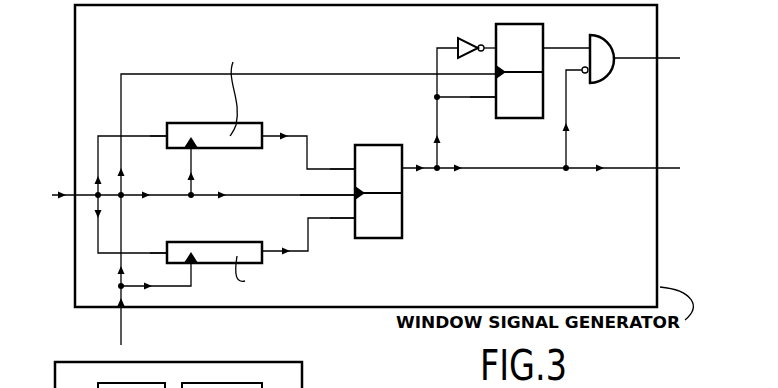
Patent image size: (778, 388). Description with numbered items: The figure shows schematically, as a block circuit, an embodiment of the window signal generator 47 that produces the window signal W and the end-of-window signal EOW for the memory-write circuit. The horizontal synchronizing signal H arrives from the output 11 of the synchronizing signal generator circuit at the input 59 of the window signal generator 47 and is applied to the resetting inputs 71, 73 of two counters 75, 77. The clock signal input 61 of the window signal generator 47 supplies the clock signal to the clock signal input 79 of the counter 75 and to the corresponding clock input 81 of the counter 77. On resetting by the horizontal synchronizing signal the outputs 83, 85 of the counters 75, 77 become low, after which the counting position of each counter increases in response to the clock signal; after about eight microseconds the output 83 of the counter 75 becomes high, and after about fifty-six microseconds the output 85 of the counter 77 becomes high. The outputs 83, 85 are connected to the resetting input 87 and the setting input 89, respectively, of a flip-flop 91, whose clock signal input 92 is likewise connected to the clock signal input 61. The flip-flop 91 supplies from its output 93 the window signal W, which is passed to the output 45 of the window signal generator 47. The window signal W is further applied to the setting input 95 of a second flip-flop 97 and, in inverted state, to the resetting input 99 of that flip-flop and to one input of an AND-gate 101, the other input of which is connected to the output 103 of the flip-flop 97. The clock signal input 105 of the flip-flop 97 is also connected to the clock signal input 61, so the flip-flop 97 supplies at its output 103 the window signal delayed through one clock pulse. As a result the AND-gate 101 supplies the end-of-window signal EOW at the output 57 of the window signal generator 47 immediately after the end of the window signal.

The window signal generator 47 is at (348, 156).
The clock signal input 61 is at (123, 312).
The output of the synchronizing signal generator circuit 11 is at (197, 200).
The input of the window signal generator 59 is at (108, 194).
The counter 75 is at (219, 123).
The resetting input 71 is at (163, 126).
The clock signal input 79 is at (192, 147).
The output of the counter 83 is at (308, 128).
The counter 77 is at (221, 242).
The resetting input 73 is at (165, 241).
The clock input of second counter 81 is at (192, 266).
The output of the counter 85 is at (265, 248).
The flip-flop 91 is at (392, 238).
The resetting input 87 is at (352, 166).
The clock signal input 92 is at (352, 191).
The setting input 89 is at (352, 222).
The output of the flip-flop 93 is at (404, 166).
The clock signal input 105 is at (437, 58).
The resetting input 99 is at (491, 41).
The flip-flop 97 is at (533, 118).
The setting input 95 is at (494, 116).
The output of the flip-flop 103 is at (547, 43).
The AND-gate 101 is at (605, 76).
The output of the window signal generator 57 is at (659, 60).
The output of the window signal generator 45 is at (622, 174).